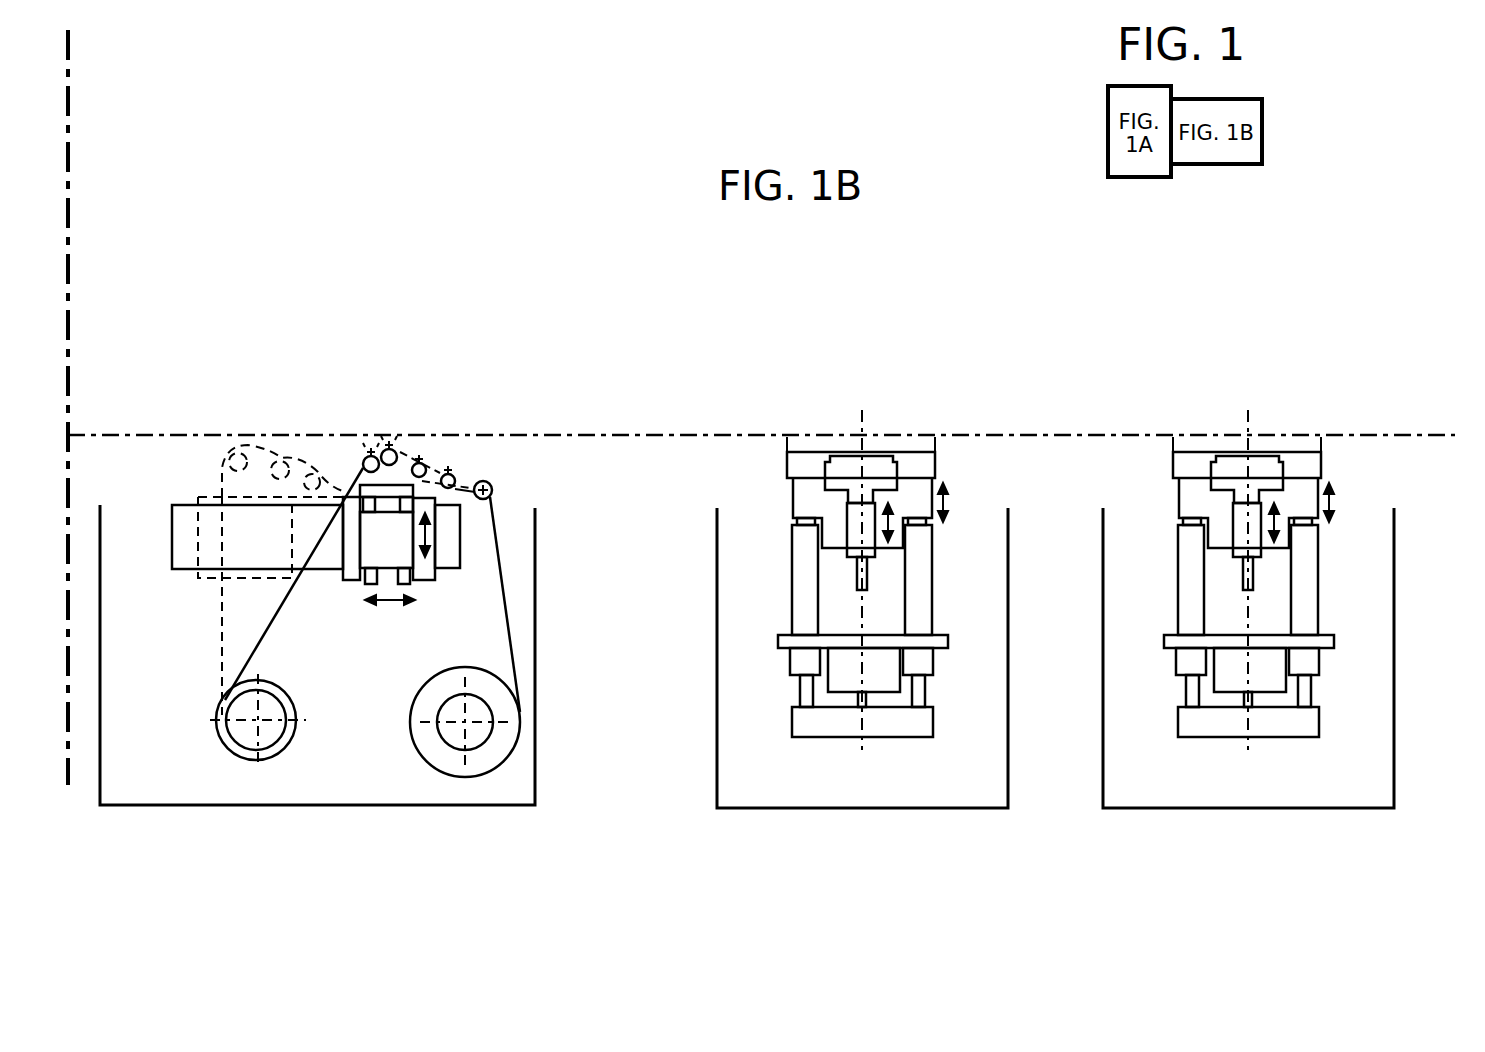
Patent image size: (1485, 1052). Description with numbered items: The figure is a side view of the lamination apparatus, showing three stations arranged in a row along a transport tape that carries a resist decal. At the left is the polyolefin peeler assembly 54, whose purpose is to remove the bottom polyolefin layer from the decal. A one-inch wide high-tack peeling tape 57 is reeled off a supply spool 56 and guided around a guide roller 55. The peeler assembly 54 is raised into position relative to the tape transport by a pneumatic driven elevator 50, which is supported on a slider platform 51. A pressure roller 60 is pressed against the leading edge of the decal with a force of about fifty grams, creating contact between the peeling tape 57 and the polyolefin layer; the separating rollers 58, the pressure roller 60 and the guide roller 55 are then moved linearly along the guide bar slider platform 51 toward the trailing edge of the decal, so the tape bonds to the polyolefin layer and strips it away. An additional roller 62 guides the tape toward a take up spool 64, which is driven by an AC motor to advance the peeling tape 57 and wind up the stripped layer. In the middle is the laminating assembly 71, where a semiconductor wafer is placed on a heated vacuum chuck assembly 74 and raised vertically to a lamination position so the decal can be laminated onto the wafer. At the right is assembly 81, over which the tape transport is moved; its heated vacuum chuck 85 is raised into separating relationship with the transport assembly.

The pneumatic driven elevator 50 is at (380, 553).
The slider platform 51 is at (182, 577).
The polyolefin peeler assembly 54 is at (530, 496).
The guide roller 55 is at (366, 462).
The supply spool 56 is at (300, 705).
The peeling tape 57 is at (507, 612).
The separating rollers 58 is at (422, 457).
The pressure roller 60 is at (400, 453).
The idler roller 62 is at (493, 497).
The take up spool 64 is at (505, 760).
The laminating assembly 71 is at (886, 590).
The heated vacuum chuck assembly 74 is at (935, 466).
The assembly 81 is at (1282, 590).
The heated vacuum chuck 85 is at (1318, 456).